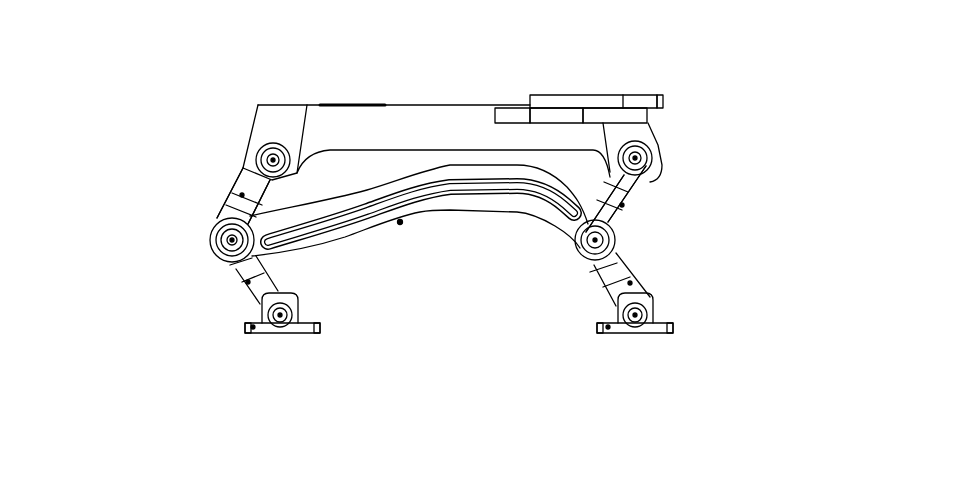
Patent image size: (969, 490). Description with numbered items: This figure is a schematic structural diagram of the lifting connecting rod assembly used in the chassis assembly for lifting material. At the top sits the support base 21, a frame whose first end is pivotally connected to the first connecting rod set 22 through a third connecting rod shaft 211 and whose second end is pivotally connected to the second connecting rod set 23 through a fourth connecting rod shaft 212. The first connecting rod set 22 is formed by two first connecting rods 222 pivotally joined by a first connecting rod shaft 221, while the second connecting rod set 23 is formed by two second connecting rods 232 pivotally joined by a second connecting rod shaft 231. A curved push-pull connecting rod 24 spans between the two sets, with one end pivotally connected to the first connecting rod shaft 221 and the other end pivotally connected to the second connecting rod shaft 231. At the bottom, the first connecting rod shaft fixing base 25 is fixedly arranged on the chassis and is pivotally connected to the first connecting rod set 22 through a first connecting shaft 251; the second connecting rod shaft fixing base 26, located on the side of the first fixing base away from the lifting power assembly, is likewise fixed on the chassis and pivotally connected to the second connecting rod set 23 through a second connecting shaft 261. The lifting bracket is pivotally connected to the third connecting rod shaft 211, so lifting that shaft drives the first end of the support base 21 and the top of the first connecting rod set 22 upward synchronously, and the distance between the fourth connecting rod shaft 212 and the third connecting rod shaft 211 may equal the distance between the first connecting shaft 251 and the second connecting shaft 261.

The support base 21 is at (368, 122).
The third connecting rod shaft 211 is at (638, 156).
The fourth connecting rod shaft 212 is at (269, 157).
The first connecting rod set 22 is at (768, 128).
The first connecting rod shaft 221 is at (597, 238).
The first connecting rod 222 is at (622, 205).
The second connecting rod set 23 is at (118, 98).
The second connecting rod shaft 231 is at (216, 226).
The second connecting rod 232 is at (242, 195).
The push-pull connecting rod 24 is at (400, 222).
The first connecting rod shaft fixing base 25 is at (608, 327).
The first connecting shaft 251 is at (636, 318).
The second connecting rod shaft fixing base 26 is at (253, 327).
The second connecting shaft 261 is at (283, 325).